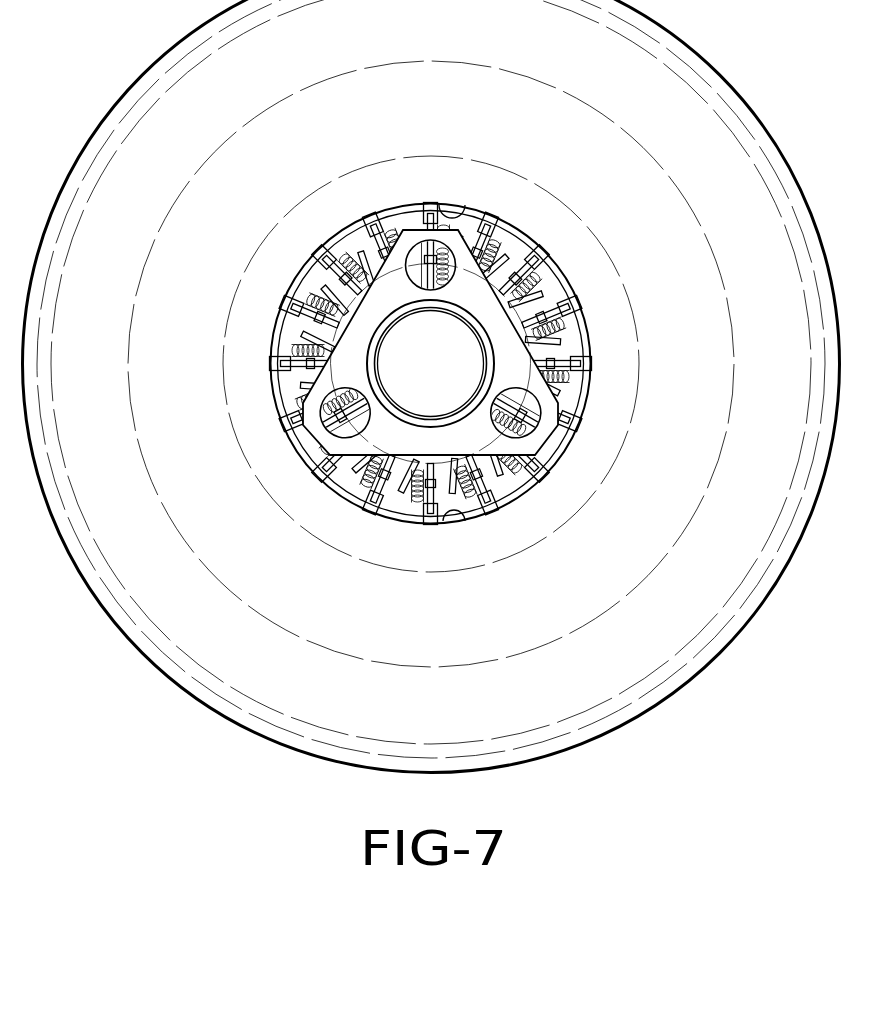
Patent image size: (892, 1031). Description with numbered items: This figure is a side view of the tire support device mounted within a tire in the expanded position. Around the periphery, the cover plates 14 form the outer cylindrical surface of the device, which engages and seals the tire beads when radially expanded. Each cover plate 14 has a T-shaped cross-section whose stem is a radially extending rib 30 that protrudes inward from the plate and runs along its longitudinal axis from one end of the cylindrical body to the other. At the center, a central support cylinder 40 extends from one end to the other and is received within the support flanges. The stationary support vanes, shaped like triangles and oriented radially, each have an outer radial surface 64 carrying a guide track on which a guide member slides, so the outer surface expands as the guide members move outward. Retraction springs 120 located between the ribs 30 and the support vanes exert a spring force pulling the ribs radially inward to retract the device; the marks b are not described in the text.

The cover plate 14 is at (360, 228).
The rib 30 is at (428, 225).
The central support cylinder 40 is at (394, 330).
The outer radial surface 64 is at (330, 283).
The retraction spring 120 is at (540, 283).
The notch b is at (457, 216).